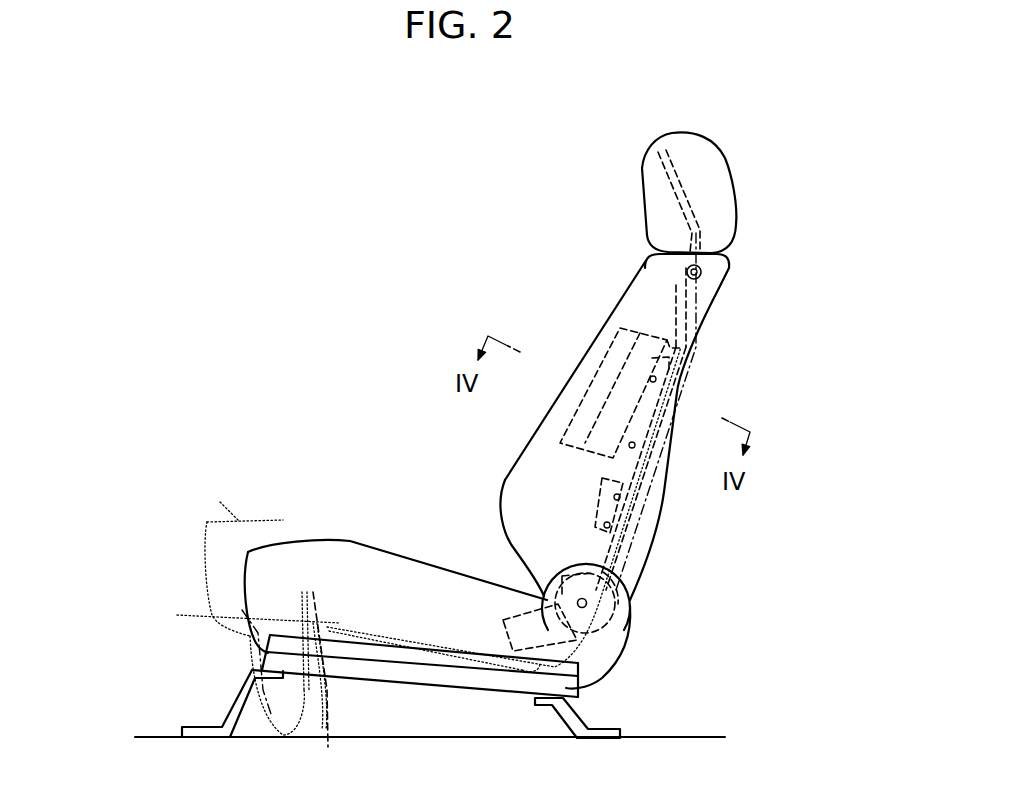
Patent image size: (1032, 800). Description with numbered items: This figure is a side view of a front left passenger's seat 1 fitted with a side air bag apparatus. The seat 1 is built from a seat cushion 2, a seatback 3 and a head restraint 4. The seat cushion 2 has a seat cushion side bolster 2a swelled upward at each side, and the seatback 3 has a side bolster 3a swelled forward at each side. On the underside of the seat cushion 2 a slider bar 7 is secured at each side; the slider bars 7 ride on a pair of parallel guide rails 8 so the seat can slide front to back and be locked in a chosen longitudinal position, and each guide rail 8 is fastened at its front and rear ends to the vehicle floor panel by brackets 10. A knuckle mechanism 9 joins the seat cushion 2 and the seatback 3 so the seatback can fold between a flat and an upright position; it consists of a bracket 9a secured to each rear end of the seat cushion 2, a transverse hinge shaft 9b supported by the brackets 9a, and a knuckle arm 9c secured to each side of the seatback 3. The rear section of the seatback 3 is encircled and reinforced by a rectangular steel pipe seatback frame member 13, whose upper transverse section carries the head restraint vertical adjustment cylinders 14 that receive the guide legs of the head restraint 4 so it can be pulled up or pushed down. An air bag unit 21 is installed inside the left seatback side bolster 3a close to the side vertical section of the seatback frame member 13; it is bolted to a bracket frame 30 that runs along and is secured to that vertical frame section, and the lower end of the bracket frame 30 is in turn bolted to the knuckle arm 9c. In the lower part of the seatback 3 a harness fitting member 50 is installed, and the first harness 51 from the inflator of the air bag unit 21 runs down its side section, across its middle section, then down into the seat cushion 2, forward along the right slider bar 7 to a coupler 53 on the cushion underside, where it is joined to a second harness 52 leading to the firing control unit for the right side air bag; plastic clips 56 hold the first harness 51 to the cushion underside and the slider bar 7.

The seat 1 is at (441, 469).
The seat cushion 2 is at (260, 548).
The seat cushion side bolster 2a is at (350, 542).
The seatback 3 is at (633, 283).
The seatback side bolster 3a is at (533, 445).
The head restraint 4 is at (725, 165).
The slider bar 7 is at (590, 681).
The guide rail 8 is at (443, 683).
The knuckle mechanism 9 is at (670, 597).
The bracket 9a is at (560, 594).
The transverse hinge shaft 9b is at (557, 640).
The knuckle arm 9c is at (630, 585).
The bracket 10 is at (240, 723).
The seatback frame member 13 is at (667, 340).
The head restraint vertical adjustment cylinder 14 is at (700, 268).
The air bag unit 21 is at (680, 360).
The bracket frame 30 is at (660, 508).
The harness fitting member 50 is at (578, 560).
The first harness 51 is at (636, 600).
The second harness 52 is at (268, 703).
The coupler 53 is at (248, 615).
The plastic clip 56 is at (507, 681).